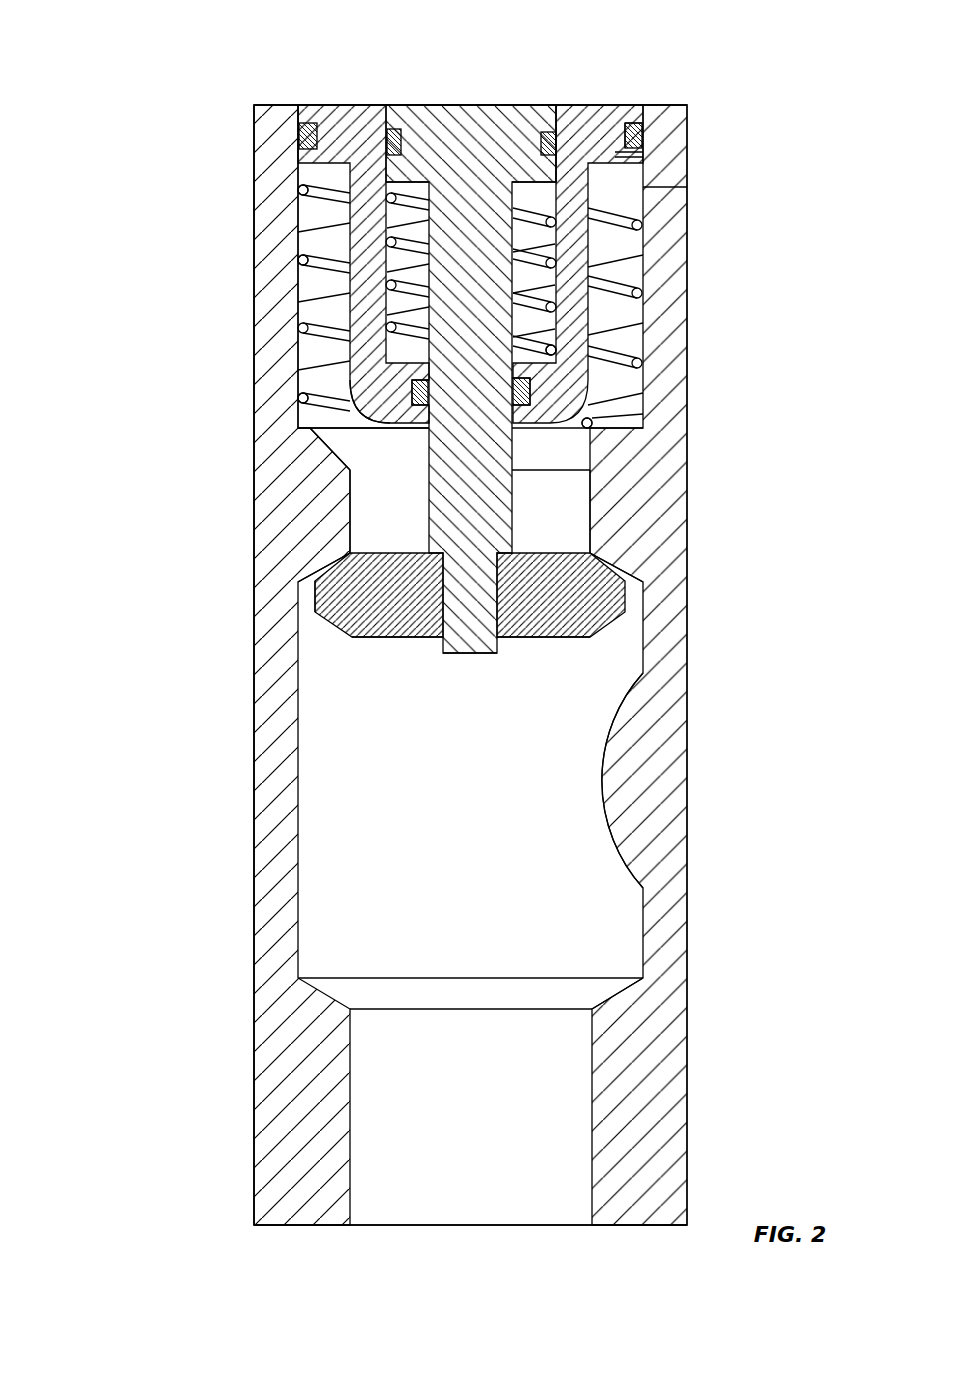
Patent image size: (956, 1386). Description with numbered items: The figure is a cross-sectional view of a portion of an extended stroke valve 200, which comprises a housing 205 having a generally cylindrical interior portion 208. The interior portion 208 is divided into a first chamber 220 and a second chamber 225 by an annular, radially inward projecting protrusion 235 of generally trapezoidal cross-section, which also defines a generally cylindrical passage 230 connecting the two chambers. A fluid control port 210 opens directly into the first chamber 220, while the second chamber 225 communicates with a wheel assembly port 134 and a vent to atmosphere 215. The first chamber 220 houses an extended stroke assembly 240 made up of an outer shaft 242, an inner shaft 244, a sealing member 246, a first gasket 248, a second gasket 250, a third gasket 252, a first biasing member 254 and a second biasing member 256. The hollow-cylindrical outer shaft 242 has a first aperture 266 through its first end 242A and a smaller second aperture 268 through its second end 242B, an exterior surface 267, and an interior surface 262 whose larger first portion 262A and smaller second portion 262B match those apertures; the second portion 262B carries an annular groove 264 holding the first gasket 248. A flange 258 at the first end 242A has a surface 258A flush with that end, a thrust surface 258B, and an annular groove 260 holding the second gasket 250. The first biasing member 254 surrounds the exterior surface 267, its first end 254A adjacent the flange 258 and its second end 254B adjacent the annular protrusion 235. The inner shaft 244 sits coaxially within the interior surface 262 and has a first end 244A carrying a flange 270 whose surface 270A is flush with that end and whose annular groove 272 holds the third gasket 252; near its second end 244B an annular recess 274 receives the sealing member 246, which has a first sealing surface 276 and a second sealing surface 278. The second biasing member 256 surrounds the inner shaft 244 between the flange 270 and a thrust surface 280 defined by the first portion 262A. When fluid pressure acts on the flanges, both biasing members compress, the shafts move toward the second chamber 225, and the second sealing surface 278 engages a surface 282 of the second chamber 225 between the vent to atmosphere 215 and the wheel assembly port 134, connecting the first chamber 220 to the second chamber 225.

The extended stroke valve 200 is at (119, 108).
The wheel assembly port 134 is at (655, 770).
The housing 205 is at (292, 1087).
The interior portion 208 is at (292, 878).
The fluid control port 210 is at (663, 268).
The vent to atmosphere 215 is at (562, 1137).
The first chamber 220 is at (310, 300).
The second chamber 225 is at (305, 760).
The passage 230 is at (560, 490).
The annular protrusion 235 is at (310, 505).
The extended stroke assembly 240 is at (578, 70).
The outer shaft 242 is at (590, 197).
The first end 242A is at (312, 108).
The second end 242B is at (330, 440).
The inner shaft 244 is at (510, 445).
The first end 244A is at (495, 105).
The second end 244B is at (470, 658).
The sealing member 246 is at (622, 575).
The first gasket 248 is at (411, 395).
The second gasket 250 is at (304, 137).
The third gasket 252 is at (560, 143).
The first biasing member 254 is at (300, 330).
The first end 254A is at (300, 190).
The second end 254B is at (592, 422).
The second biasing member 256 is at (600, 340).
The flange 258 is at (642, 142).
The surface 258A is at (610, 102).
The thrust surface 258B is at (643, 156).
The annular groove 260 is at (642, 128).
The interior surface 262 is at (388, 198).
The first portion 262A is at (300, 262).
The second portion 262B is at (555, 380).
The annular groove 264 is at (530, 392).
The first aperture 266 is at (547, 105).
The exterior surface 267 is at (352, 360).
The second aperture 268 is at (340, 455).
The flange 270 is at (415, 118).
The surface 270A is at (448, 105).
The annular groove 272 is at (392, 128).
The annular recess 274 is at (440, 640).
The first sealing surface 276 is at (330, 568).
The second sealing surface 278 is at (330, 628).
The thrust surface 280 is at (300, 398).
The surface 282 is at (612, 990).